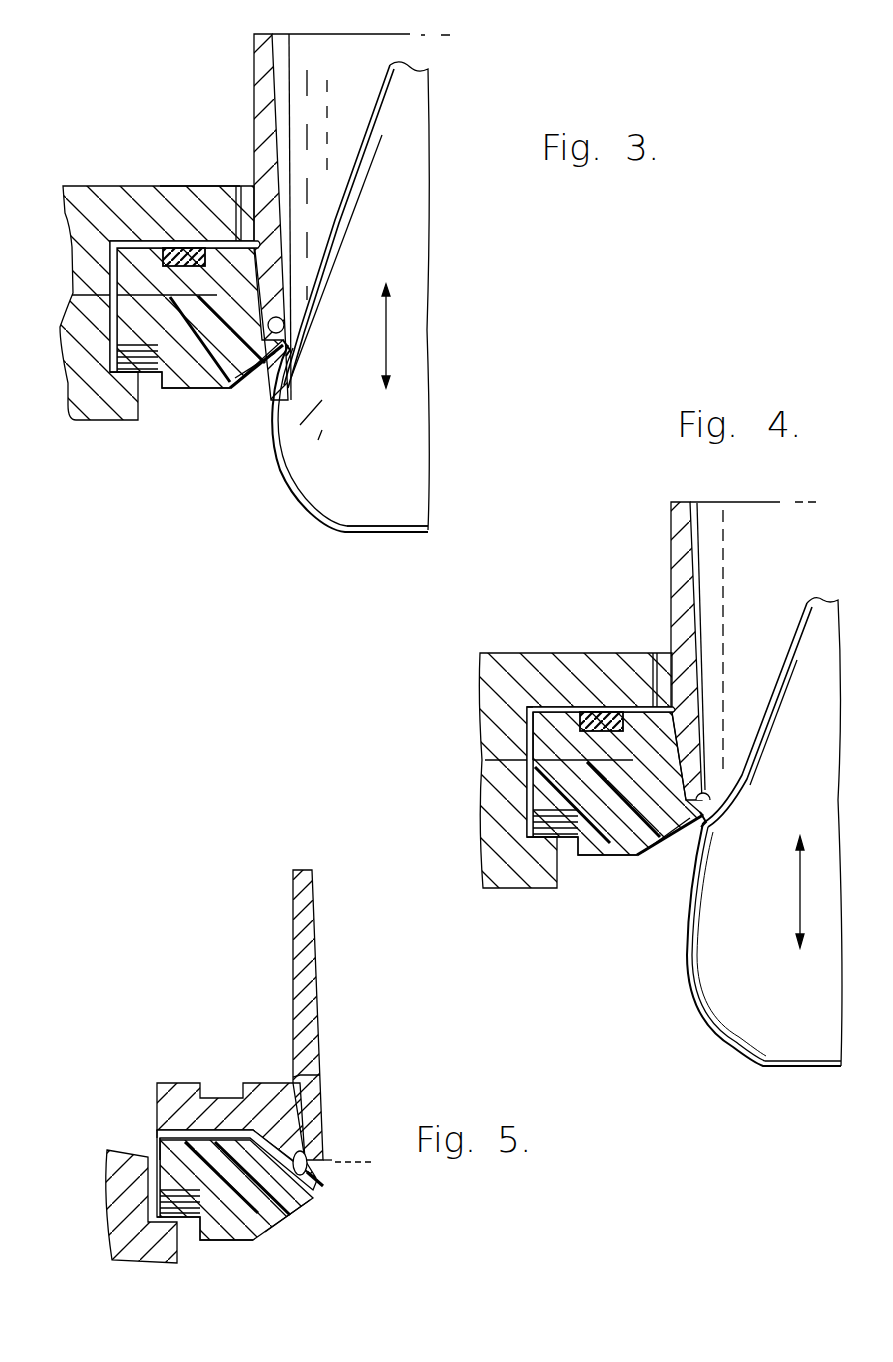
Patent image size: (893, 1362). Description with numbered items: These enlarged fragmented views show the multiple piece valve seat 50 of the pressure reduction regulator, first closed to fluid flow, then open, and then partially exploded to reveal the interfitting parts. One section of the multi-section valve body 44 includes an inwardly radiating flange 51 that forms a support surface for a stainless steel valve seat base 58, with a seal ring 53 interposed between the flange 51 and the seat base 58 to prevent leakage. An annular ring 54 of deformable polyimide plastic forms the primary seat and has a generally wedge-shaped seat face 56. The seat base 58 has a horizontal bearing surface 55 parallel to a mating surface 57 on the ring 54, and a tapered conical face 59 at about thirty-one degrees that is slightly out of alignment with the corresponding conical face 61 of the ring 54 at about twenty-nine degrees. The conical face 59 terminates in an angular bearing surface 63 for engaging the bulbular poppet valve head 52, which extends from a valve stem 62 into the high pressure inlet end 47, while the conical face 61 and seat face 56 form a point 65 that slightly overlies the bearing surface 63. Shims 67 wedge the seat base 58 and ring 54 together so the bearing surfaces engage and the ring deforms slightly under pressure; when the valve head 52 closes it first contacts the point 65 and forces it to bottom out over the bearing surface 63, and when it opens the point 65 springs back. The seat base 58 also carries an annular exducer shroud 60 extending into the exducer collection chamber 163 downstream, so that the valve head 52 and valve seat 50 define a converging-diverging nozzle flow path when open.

In FIG. 3, the valve body 44 is at (88, 400).
In FIG. 4, the valve body 44 is at (490, 835).
In FIG. 5, the valve body 44 is at (138, 1250).
In FIG. 3, the inlet end 47 is at (266, 526).
In FIG. 3, the multiple piece valve seat 50 is at (225, 458).
In FIG. 4, the multiple piece valve seat 50 is at (580, 600).
In FIG. 5, the multiple piece valve seat 50 is at (215, 997).
In FIG. 3, the inwardly radiating flange 51 is at (190, 188).
In FIG. 3, the poppet valve head 52 is at (323, 510).
In FIG. 3, the seal ring 53 is at (182, 250).
In FIG. 4, the seal ring 53 is at (593, 718).
In FIG. 3, the annular ring 54 is at (197, 367).
In FIG. 4, the annular ring 54 is at (612, 840).
In FIG. 5, the annular ring 54 is at (272, 1223).
In FIG. 4, the horizontal bearing surface 55 is at (558, 723).
In FIG. 5, the horizontal bearing surface 55 is at (188, 1153).
In FIG. 3, the wedge-shaped seat face 56 is at (277, 407).
In FIG. 4, the wedge-shaped seat face 56 is at (683, 848).
In FIG. 4, the mating surface 57 is at (530, 690).
In FIG. 5, the mating surface 57 is at (168, 1127).
In FIG. 3, the valve seat base 58 is at (232, 265).
In FIG. 4, the valve seat base 58 is at (620, 670).
In FIG. 5, the valve seat base 58 is at (267, 1100).
In FIG. 5, the tapered conical face 59 is at (323, 1107).
In FIG. 3, the annular exducer shroud 60 is at (267, 92).
In FIG. 4, the annular exducer shroud 60 is at (678, 540).
In FIG. 5, the annular exducer shroud 60 is at (293, 870).
In FIG. 5, the tapered conical face 61 is at (303, 1193).
In FIG. 3, the valve stem 62 is at (392, 90).
In FIG. 4, the valve stem 62 is at (795, 627).
In FIG. 3, the angular bearing surface 63 is at (278, 323).
In FIG. 4, the angular bearing surface 63 is at (707, 797).
In FIG. 5, the angular bearing surface 63 is at (325, 1160).
In FIG. 3, the point 65 is at (297, 347).
In FIG. 4, the point 65 is at (703, 820).
In FIG. 5, the point 65 is at (325, 1185).
In FIG. 3, the shims 67 is at (145, 370).
In FIG. 4, the shims 67 is at (563, 827).
In FIG. 5, the shims 67 is at (190, 1217).
In FIG. 3, the exducer collection chamber 163 is at (160, 89).